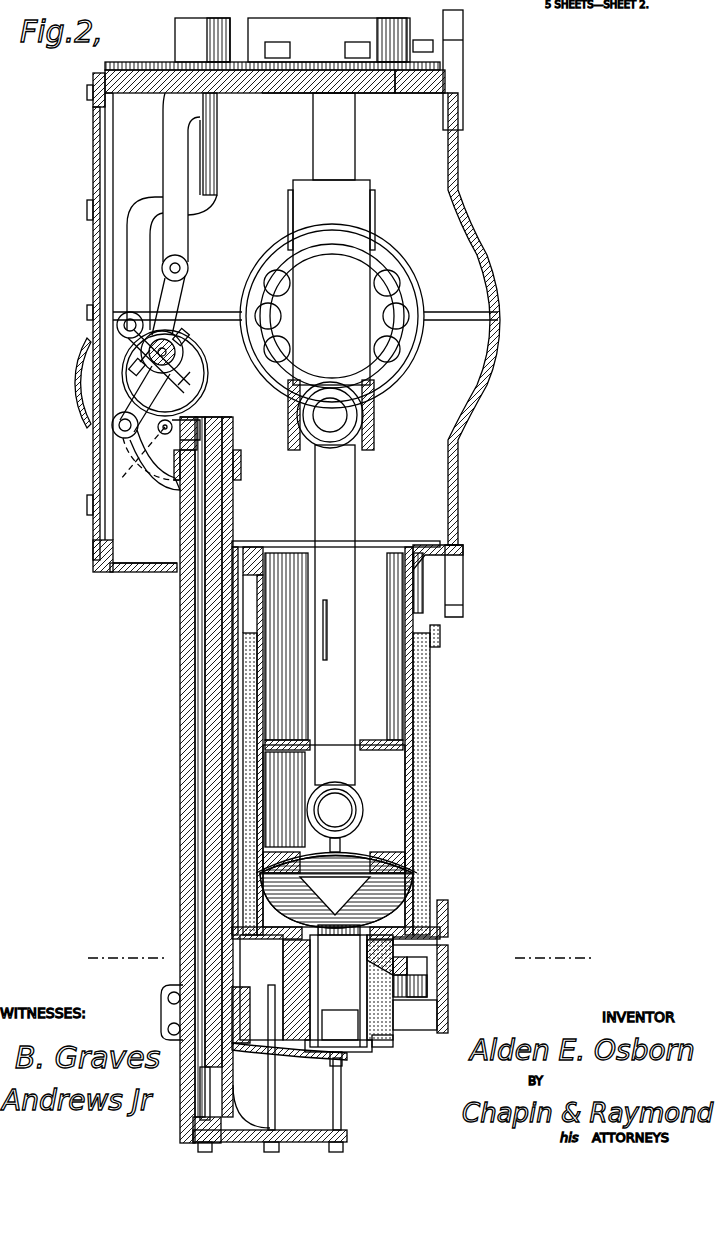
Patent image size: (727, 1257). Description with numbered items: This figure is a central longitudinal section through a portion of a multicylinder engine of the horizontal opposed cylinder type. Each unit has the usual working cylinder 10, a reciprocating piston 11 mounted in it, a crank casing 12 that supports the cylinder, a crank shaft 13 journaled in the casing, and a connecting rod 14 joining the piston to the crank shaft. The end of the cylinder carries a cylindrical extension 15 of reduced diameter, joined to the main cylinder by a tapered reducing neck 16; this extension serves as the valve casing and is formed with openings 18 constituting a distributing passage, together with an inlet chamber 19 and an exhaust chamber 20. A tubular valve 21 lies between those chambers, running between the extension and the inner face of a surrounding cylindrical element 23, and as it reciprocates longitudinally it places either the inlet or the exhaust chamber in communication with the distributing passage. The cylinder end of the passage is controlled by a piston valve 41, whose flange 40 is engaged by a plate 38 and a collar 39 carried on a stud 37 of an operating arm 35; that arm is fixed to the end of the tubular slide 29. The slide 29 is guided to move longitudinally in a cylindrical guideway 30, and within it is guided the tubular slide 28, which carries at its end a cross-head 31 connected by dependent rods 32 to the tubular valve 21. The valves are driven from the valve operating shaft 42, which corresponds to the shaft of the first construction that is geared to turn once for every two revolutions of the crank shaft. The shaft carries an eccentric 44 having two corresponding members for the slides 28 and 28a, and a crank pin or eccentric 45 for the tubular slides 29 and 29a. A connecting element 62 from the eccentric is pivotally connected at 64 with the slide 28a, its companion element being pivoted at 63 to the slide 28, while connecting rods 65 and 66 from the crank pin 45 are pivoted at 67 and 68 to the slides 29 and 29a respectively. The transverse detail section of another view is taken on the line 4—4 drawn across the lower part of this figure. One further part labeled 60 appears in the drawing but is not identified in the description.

The line 4— 4 is at (86, 953).
The working cylinder 10 is at (395, 35).
The reciprocating piston 11 is at (412, 810).
The crank casing 12 is at (293, 313).
The crank shaft 13 is at (331, 315).
The connecting rod 14 is at (340, 145).
The cylindrical extension 15 is at (448, 1010).
The tapered reducing neck 16 is at (336, 891).
The openings 18 is at (448, 915).
The inlet chamber 19 is at (440, 942).
The exhaust chamber 20 is at (412, 981).
The tubular valve 21 is at (283, 960).
The cylindrical element 23 is at (407, 967).
The tubular slide 28 is at (215, 437).
The tubular slide 28a is at (218, 170).
The second tubular slide 29 is at (233, 492).
The tubular slide 29a is at (220, 110).
The cylindrical guideway 30 is at (182, 790).
The cross-head 31 is at (296, 1133).
The dependent rods 32 is at (268, 1085).
The operating arm 35 is at (300, 1062).
The stud 37 is at (342, 1060).
The plate 38 is at (350, 1052).
The collar 39 is at (340, 1021).
The flange 40 is at (390, 1045).
The piston valve 41 is at (338, 986).
The valve operating shaft 42 is at (110, 392).
The eccentric 44 is at (192, 388).
The crank pin 45 is at (168, 352).
The passage 60 is at (372, 1010).
The connecting element 62 is at (150, 345).
The pivotal connection 63 is at (160, 458).
The pivotal connection 64 is at (118, 327).
The connecting rod 65 is at (140, 380).
The connecting rod 66 is at (178, 298).
The pivotal connection 67 is at (120, 430).
The pivotal connection 68 is at (182, 268).